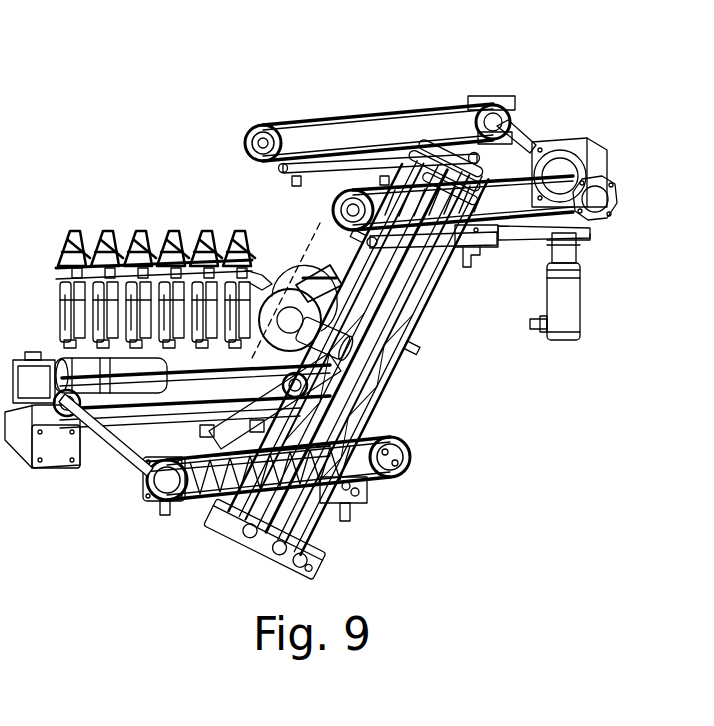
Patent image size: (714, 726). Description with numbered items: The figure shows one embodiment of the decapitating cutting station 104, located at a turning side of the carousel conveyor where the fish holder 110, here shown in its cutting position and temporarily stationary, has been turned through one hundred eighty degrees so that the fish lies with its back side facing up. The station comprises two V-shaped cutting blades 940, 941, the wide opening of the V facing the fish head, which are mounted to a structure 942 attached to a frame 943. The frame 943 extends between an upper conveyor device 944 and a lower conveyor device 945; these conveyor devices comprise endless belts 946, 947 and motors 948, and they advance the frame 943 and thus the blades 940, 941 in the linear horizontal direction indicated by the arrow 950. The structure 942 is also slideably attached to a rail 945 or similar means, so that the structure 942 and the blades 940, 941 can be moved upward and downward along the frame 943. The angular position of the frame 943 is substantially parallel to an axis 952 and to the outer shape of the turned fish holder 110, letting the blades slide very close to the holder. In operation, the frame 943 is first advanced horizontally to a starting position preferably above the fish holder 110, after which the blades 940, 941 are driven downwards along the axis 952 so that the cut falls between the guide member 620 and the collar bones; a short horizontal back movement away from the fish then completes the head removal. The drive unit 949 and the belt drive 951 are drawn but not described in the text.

The decapitating cutting station 104 is at (241, 194).
The fish holder 110 is at (102, 179).
The guide member 620 is at (273, 278).
The V-shaped cutting blade 940 is at (293, 281).
The V-shaped cutting blade 941 is at (340, 281).
The structure 942 is at (403, 367).
The frame 943 is at (372, 416).
The upper conveyor device 944 is at (461, 266).
The lower conveyor device 945 is at (407, 300).
The endless belt 946 is at (505, 175).
The endless belt 947 is at (208, 462).
The motor 948 is at (562, 342).
The drive motor 949 is at (172, 362).
The arrow 950 is at (358, 81).
The belt drive 951 is at (312, 217).
The axis 952 is at (305, 222).